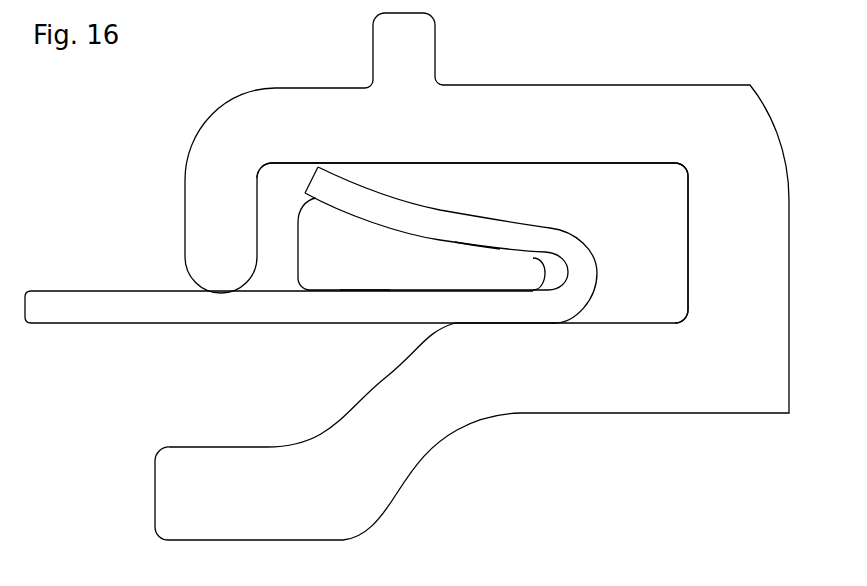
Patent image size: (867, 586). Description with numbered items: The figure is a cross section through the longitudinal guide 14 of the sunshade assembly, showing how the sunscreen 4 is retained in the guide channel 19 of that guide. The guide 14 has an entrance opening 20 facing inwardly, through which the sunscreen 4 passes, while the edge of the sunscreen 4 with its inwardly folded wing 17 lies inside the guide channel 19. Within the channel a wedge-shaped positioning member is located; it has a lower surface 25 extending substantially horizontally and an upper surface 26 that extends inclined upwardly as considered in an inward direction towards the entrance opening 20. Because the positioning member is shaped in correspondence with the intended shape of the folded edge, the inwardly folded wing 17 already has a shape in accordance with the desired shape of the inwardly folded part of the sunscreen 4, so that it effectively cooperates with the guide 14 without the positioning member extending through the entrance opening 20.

The sunscreen 4 is at (60, 317).
The longitudinal guide 14 is at (597, 78).
The inwardly folded wing 17 is at (413, 215).
The guide channel 19 is at (472, 243).
The entrance opening 20 is at (198, 370).
The lower surface 25 is at (362, 285).
The upper surface 26 is at (472, 246).